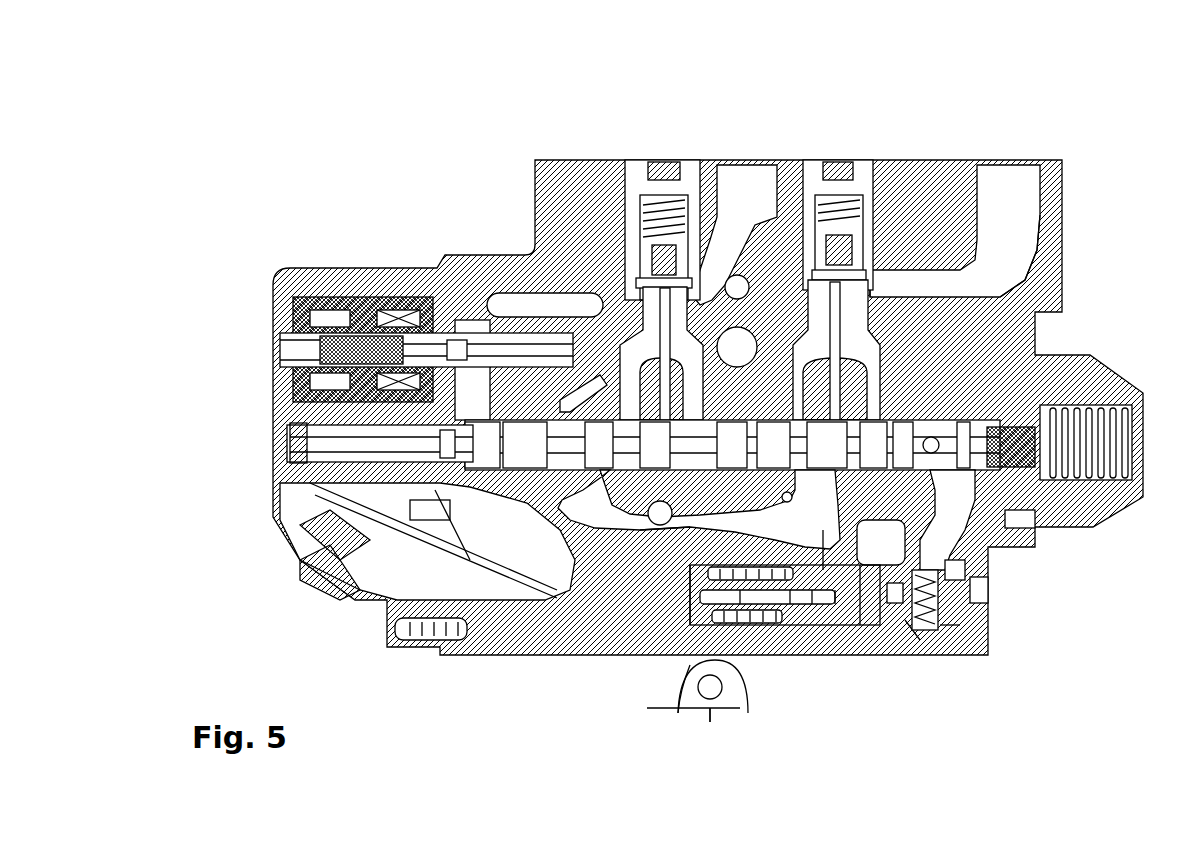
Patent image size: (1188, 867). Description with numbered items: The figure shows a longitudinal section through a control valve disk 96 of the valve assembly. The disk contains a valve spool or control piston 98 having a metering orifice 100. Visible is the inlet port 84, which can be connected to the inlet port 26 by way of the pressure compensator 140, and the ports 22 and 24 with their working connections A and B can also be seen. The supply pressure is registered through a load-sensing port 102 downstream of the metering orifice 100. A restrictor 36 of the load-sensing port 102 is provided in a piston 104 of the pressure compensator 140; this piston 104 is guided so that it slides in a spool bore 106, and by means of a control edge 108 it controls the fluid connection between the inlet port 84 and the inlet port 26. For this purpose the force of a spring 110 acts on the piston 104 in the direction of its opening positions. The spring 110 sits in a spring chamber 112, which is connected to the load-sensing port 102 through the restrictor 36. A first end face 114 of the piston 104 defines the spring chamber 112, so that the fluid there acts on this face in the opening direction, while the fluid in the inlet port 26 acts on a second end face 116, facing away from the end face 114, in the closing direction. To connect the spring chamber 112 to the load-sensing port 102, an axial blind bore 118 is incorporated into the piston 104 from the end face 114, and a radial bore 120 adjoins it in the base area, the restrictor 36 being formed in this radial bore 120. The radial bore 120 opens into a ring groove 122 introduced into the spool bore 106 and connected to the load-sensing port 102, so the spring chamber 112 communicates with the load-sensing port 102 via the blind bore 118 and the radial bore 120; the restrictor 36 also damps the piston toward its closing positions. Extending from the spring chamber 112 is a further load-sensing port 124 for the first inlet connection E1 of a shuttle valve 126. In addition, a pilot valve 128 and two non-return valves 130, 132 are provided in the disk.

The control valve disk 96 is at (553, 190).
The pilot valve 128 is at (465, 300).
The non-return valve 130 is at (628, 160).
The port 24 is at (705, 162).
The working connection B is at (743, 190).
The non-return valve 132 is at (868, 160).
The valve spool or control piston 98 is at (897, 400).
The working connection A is at (1003, 190).
The port 22 is at (1010, 255).
The metering orifice 100 is at (880, 420).
The inlet port 26 is at (942, 530).
The second end face 116 is at (937, 572).
The control edge 108 is at (987, 607).
The inlet port 84 is at (899, 557).
The radial bore 120 is at (822, 536).
The load-sensing port 102 is at (600, 640).
The spring 110 is at (690, 640).
The first end face 114 is at (635, 538).
The load-sensing port 124 is at (680, 700).
The shuttle valve 126 is at (710, 722).
The first inlet connection E1 is at (708, 698).
The spring chamber 112 is at (745, 630).
The blind bore 118 is at (797, 657).
The piston 104 is at (812, 653).
The ring groove 122 is at (843, 653).
The restrictor 36 is at (863, 653).
The pressure compensator 140 is at (913, 640).
The spool bore 106 is at (943, 653).